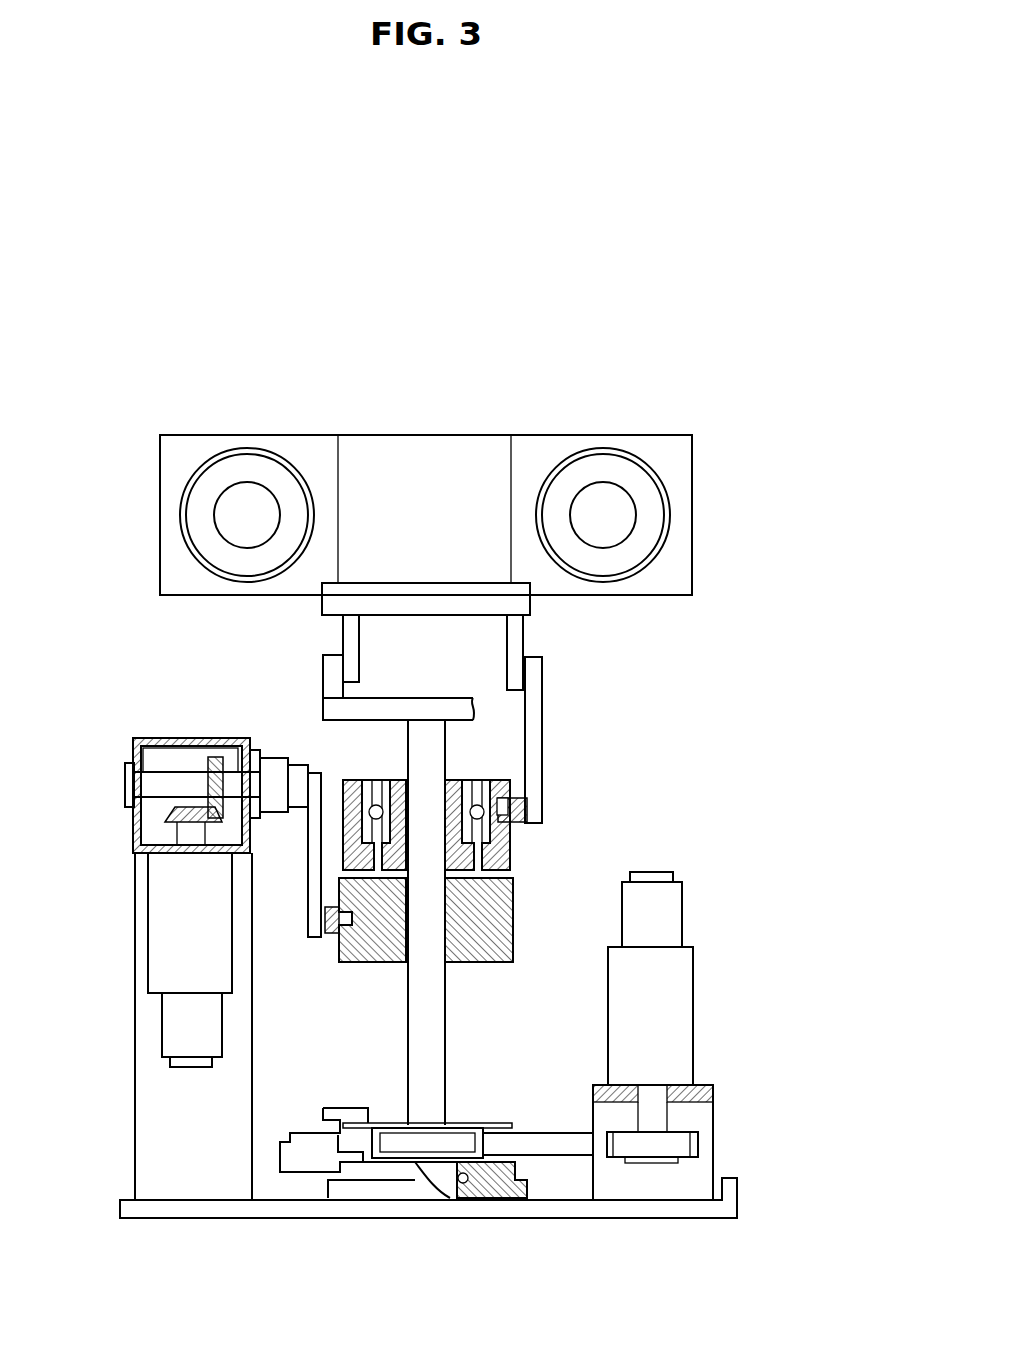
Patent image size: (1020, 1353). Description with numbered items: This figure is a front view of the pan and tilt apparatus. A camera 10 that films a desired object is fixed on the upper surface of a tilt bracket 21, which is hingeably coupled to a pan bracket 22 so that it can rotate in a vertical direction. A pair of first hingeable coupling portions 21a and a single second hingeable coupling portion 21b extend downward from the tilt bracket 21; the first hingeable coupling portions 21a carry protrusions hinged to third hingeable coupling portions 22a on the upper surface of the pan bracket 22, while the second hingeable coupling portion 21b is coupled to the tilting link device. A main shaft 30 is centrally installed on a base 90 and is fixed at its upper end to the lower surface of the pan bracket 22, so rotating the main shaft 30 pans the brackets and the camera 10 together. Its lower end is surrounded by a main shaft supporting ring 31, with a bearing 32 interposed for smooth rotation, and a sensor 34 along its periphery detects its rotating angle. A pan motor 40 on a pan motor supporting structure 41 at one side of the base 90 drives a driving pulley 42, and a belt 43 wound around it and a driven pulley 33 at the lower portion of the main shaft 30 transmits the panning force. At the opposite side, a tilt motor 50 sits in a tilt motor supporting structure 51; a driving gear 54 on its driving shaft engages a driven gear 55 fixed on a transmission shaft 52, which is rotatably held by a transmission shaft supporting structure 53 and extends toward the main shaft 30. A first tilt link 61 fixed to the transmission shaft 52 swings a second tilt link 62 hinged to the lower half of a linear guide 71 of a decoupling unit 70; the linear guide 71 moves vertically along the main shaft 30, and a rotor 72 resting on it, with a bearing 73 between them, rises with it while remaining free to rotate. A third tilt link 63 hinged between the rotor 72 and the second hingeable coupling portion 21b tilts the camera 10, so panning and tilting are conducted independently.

The camera 10 is at (428, 445).
The tilt bracket 21 is at (397, 592).
The first hingeable coupling portions 21a is at (350, 633).
The second hingeable coupling portion 21b is at (517, 637).
The pan bracket 22 is at (393, 705).
The third hingeable coupling portions 22a is at (332, 673).
The main shaft 30 is at (445, 1072).
The main shaft supporting ring 31 is at (505, 1195).
The bearing 32 is at (467, 1167).
The driven pulley 33 is at (405, 1148).
The sensor 34 is at (350, 1108).
The pan motor 40 is at (687, 978).
The pan motor supporting structure 41 is at (707, 1087).
The driving pulley 42 is at (660, 1148).
The belt 43 is at (570, 1147).
The tilt motor 50 is at (165, 938).
The tilt motor supporting structure 51 is at (147, 1073).
The transmission shaft 52 is at (147, 785).
The transmission shaft supporting structure 53 is at (140, 738).
The driving gear 54 is at (163, 810).
The driven gear 55 is at (212, 767).
The first tilt link 61 is at (305, 808).
The second tilt link 62 is at (313, 937).
The third tilt link 63 is at (530, 710).
The decoupling unit 70 is at (519, 843).
The linear guide 71 is at (493, 953).
The rotor 72 is at (510, 848).
The bearing 73 is at (497, 780).
The base 90 is at (275, 1208).